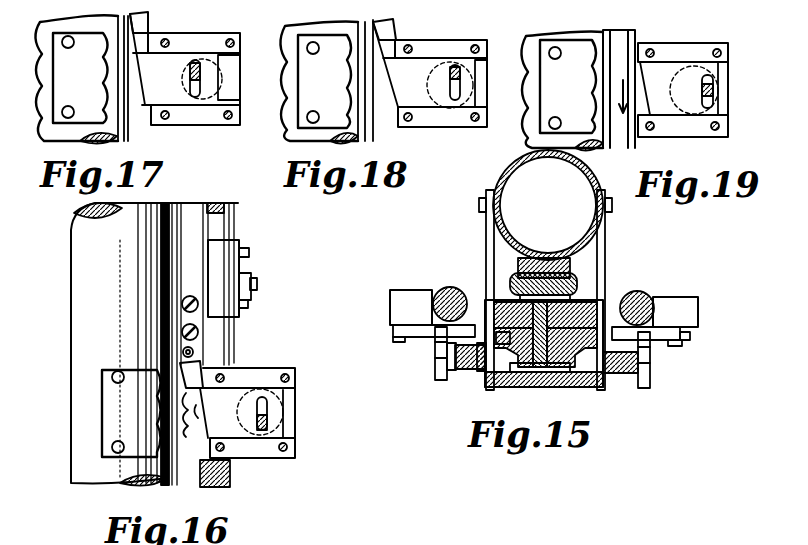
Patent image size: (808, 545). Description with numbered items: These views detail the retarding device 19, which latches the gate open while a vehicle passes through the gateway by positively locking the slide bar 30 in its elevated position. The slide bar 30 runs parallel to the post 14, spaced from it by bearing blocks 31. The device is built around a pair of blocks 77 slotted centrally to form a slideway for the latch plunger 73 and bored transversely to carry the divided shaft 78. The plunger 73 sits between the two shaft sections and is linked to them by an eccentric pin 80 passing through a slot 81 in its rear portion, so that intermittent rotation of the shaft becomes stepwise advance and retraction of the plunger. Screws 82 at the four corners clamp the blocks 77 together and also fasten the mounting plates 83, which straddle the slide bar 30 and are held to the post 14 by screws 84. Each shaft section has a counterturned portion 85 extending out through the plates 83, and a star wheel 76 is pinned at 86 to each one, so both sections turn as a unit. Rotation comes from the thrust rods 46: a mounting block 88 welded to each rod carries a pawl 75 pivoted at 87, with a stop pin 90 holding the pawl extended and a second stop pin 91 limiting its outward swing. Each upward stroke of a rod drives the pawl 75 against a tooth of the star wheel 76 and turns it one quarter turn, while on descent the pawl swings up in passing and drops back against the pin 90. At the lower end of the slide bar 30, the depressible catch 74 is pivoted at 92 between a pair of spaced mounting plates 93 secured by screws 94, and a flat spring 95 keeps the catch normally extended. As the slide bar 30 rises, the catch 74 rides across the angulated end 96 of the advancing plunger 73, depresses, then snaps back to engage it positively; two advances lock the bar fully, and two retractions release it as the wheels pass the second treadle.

In FIG. 17, the post 14 is at (46, 73).
In FIG. 18, the post 14 is at (326, 82).
In FIG. 19, the post 14 is at (529, 128).
In FIG. 16, the post 14 is at (80, 282).
In FIG. 15, the post 14 is at (500, 193).
In FIG. 16, the retarding device 19 is at (307, 380).
In FIG. 19, the slide bar 30 is at (631, 42).
In FIG. 16, the slide bar 30 is at (193, 218).
In FIG. 15, the slide bar 30 is at (565, 262).
In FIG. 18, the bearing blocks 31 is at (366, 97).
In FIG. 19, the bearing blocks 31 is at (608, 48).
In FIG. 15, the bearing blocks 31 is at (530, 262).
In FIG. 16, the thrust rods 46 is at (222, 210).
In FIG. 15, the thrust rods 46 is at (448, 290).
In FIG. 17, the latch plunger 73 is at (176, 96).
In FIG. 18, the latch plunger 73 is at (385, 64).
In FIG. 19, the latch plunger 73 is at (668, 110).
In FIG. 16, the latch plunger 73 is at (240, 392).
In FIG. 15, the latch plunger 73 is at (560, 372).
In FIG. 17, the depressible catch 74 is at (142, 33).
In FIG. 18, the depressible catch 74 is at (386, 40).
In FIG. 16, the depressible catch 74 is at (216, 372).
In FIG. 15, the depressible catch 74 is at (530, 293).
In FIG. 16, the push rod pawls 75 is at (250, 276).
In FIG. 15, the push rod pawls 75 is at (418, 338).
In FIG. 15, the star wheels 76 is at (437, 378).
In FIG. 17, the blocks 77 is at (211, 44).
In FIG. 18, the blocks 77 is at (450, 48).
In FIG. 19, the blocks 77 is at (692, 51).
In FIG. 16, the blocks 77 is at (282, 376).
In FIG. 15, the blocks 77 is at (490, 385).
In FIG. 17, the divided shaft 78 is at (226, 80).
In FIG. 18, the divided shaft 78 is at (480, 80).
In FIG. 19, the divided shaft 78 is at (714, 76).
In FIG. 16, the divided shaft 78 is at (284, 402).
In FIG. 15, the divided shaft 78 is at (605, 413).
In FIG. 17, the eccentric pin 80 is at (195, 72).
In FIG. 18, the eccentric pin 80 is at (448, 72).
In FIG. 19, the eccentric pin 80 is at (704, 91).
In FIG. 16, the eccentric pin 80 is at (268, 425).
In FIG. 15, the eccentric pin 80 is at (525, 372).
In FIG. 17, the slot 81 is at (198, 90).
In FIG. 18, the slot 81 is at (458, 95).
In FIG. 19, the slot 81 is at (713, 100).
In FIG. 16, the slot 81 is at (266, 415).
In FIG. 17, the screws 82 is at (233, 41).
In FIG. 18, the screws 82 is at (441, 83).
In FIG. 19, the screws 82 is at (721, 54).
In FIG. 16, the screws 82 is at (226, 450).
In FIG. 15, the screws 82 is at (628, 375).
In FIG. 17, the mounting plates 83 is at (62, 93).
In FIG. 18, the mounting plates 83 is at (390, 118).
In FIG. 19, the mounting plates 83 is at (568, 86).
In FIG. 16, the mounting plates 83 is at (108, 400).
In FIG. 15, the mounting plates 83 is at (488, 228).
In FIG. 17, the screws 84 is at (62, 42).
In FIG. 18, the screws 84 is at (313, 51).
In FIG. 19, the screws 84 is at (555, 88).
In FIG. 16, the screws 84 is at (112, 372).
In FIG. 15, the screws 84 is at (480, 204).
In FIG. 15, the counterturned portion 85 is at (462, 374).
In FIG. 15, the pin 86 is at (452, 372).
In FIG. 16, the pivot 87 is at (258, 284).
In FIG. 15, the pivot 87 is at (682, 346).
In FIG. 16, the mounting blocks 88 is at (230, 250).
In FIG. 15, the mounting blocks 88 is at (398, 307).
In FIG. 16, the stop pin 90 is at (250, 305).
In FIG. 16, the second stop pin 91 is at (252, 251).
In FIG. 15, the second stop pin 91 is at (692, 337).
In FIG. 16, the pivot 92 is at (182, 352).
In FIG. 16, the mounting plates 93 is at (185, 318).
In FIG. 15, the mounting plates 93 is at (582, 268).
In FIG. 16, the screws 94 is at (188, 296).
In FIG. 15, the screws 94 is at (606, 272).
In FIG. 16, the flat spring 95 is at (190, 470).
In FIG. 17, the angulated end 96 is at (118, 82).
In FIG. 16, the angulated end 96 is at (204, 418).